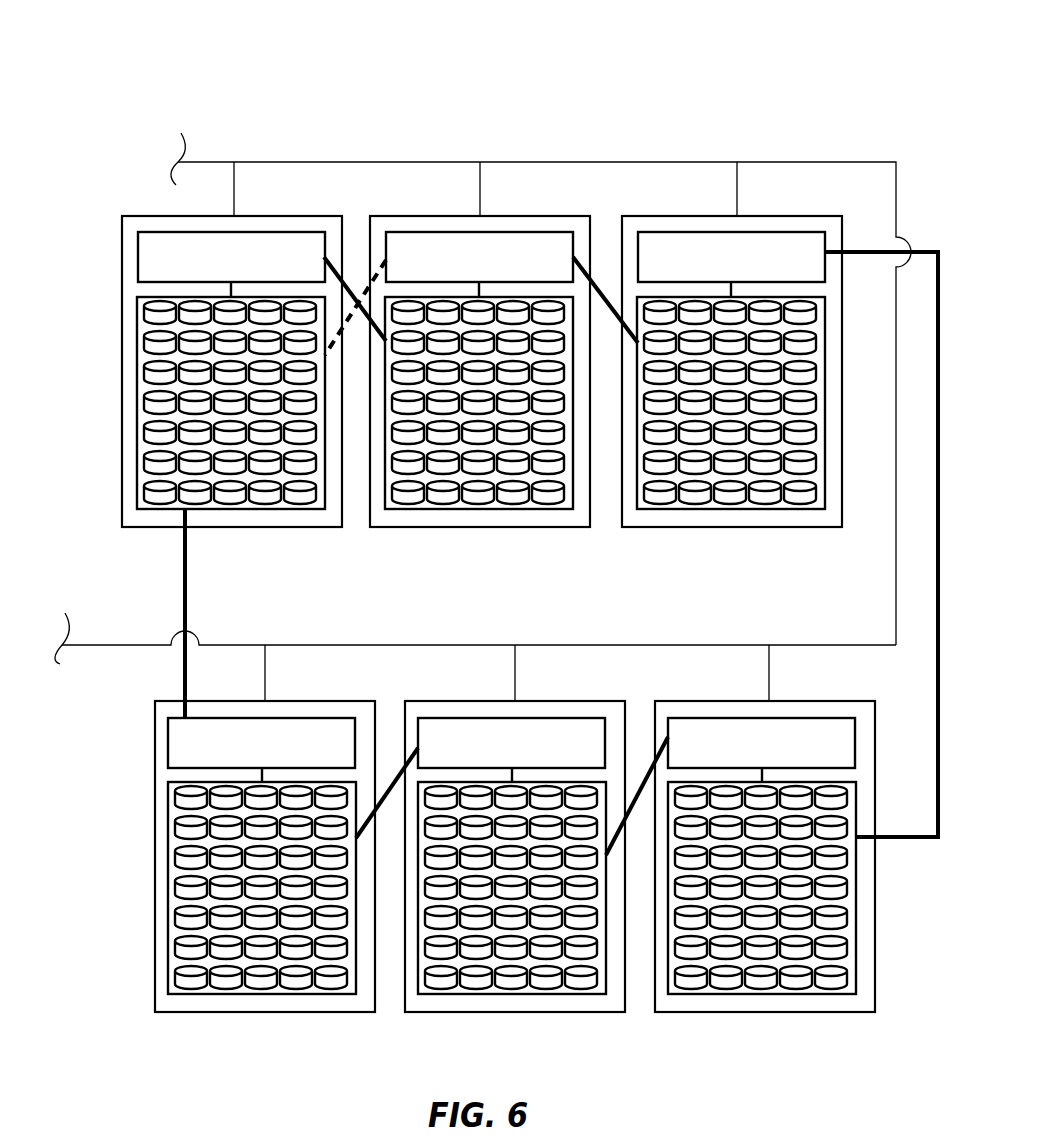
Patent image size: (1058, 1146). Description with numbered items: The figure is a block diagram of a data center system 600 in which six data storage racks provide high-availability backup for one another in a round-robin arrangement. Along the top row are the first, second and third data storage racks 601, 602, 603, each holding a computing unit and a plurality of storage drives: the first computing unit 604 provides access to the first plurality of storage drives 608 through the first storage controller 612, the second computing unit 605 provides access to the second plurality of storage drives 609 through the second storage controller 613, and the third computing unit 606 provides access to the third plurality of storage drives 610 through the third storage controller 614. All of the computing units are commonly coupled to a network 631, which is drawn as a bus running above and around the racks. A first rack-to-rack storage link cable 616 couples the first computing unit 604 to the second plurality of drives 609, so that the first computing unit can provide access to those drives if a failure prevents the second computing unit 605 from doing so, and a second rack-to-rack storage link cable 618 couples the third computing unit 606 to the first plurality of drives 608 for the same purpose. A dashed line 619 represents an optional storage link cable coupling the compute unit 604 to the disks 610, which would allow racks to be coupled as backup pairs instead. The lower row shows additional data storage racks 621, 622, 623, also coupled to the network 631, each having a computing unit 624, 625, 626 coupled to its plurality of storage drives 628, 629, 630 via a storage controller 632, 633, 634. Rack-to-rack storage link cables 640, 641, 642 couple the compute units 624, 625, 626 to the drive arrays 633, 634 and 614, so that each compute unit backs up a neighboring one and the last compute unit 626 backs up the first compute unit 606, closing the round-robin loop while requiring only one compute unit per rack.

The data center system 600 is at (846, 88).
The network 631 is at (668, 165).
The rack-to-rack storage link cable 642 is at (183, 612).
The third data storage rack 603 is at (258, 213).
The third computing unit 606 is at (300, 232).
The third storage controller 614 is at (163, 509).
The third plurality of storage drives 610 is at (248, 525).
The first data storage rack 601 is at (500, 217).
The first computing unit 604 is at (543, 232).
The first storage controller 612 is at (413, 509).
The first plurality of storage drives 608 is at (496, 525).
The second data storage rack 602 is at (765, 215).
The second computing unit 605 is at (805, 232).
The second storage controller 613 is at (665, 509).
The second plurality of storage drives 609 is at (785, 525).
The second rack-to-rack storage link cable 618 is at (347, 283).
The optional storage link cable 619 is at (380, 262).
The first rack-to-rack storage link cable 616 is at (598, 285).
The additional data storage rack 623 is at (289, 701).
The computing unit 626 is at (328, 718).
The storage controller 634 is at (192, 994).
The plurality of storage drives 630 is at (284, 1012).
The additional data storage rack 622 is at (540, 701).
The computing unit 625 is at (580, 718).
The storage controller 633 is at (455, 994).
The plurality of storage drives 629 is at (530, 1012).
The additional data storage rack 621 is at (790, 701).
The computing unit 624 is at (832, 718).
The storage controller 632 is at (702, 994).
The plurality of storage drives 628 is at (818, 1012).
The rack-to-rack storage link cable 641 is at (390, 787).
The rack-to-rack storage link cable 640 is at (645, 777).